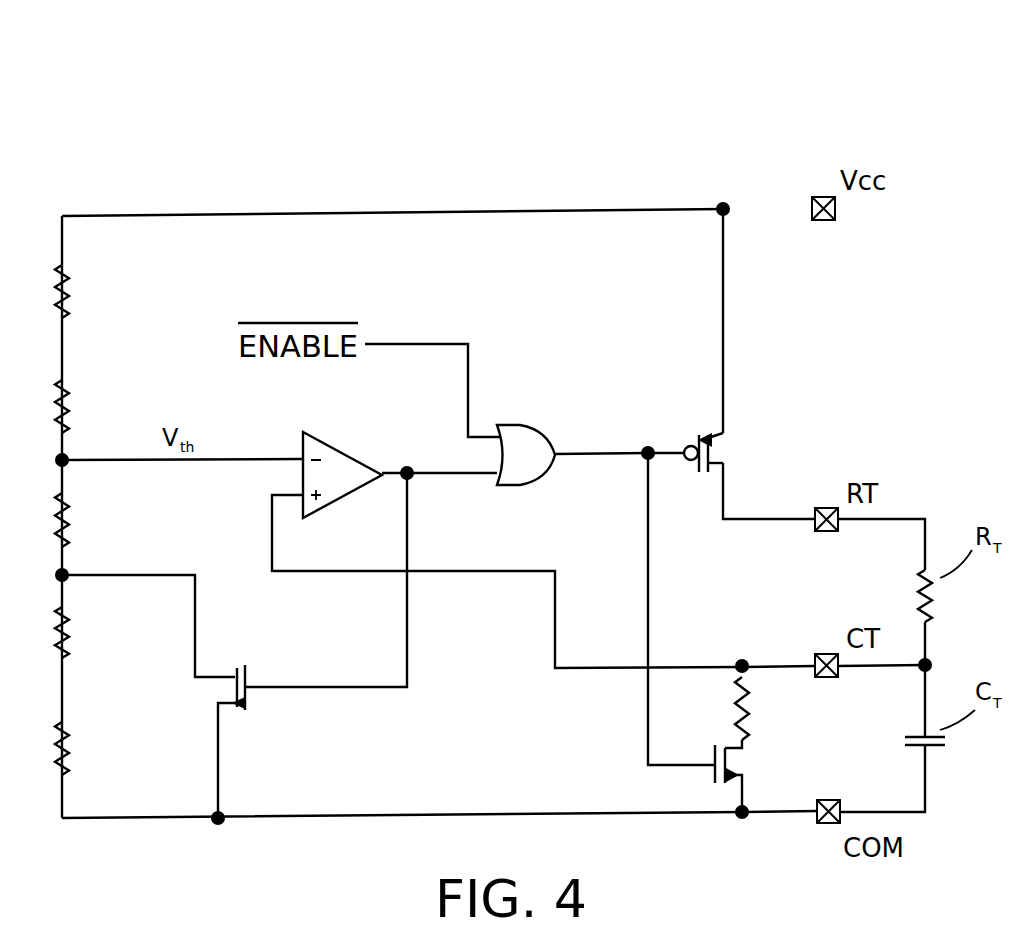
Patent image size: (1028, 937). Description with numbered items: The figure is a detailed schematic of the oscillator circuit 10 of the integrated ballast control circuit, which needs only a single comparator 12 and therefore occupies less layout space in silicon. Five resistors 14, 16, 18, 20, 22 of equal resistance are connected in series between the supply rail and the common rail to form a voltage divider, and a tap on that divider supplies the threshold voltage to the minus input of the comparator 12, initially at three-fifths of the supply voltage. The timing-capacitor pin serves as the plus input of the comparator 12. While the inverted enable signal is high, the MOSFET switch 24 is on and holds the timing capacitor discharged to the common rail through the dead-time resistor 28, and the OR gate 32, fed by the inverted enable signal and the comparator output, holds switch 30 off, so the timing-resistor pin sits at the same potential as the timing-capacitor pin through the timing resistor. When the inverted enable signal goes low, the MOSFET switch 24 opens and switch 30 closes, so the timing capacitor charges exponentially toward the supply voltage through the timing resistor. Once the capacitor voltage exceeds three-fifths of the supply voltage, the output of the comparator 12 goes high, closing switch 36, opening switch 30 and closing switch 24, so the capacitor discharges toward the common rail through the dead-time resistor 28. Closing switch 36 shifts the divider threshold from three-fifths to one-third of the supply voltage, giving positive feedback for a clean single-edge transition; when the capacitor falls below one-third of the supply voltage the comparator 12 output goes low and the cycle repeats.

The oscillator circuit 10 is at (455, 165).
The comparator 12 is at (345, 500).
The resistor 14 is at (70, 265).
The resistor 16 is at (70, 380).
The resistor 18 is at (70, 493).
The resistor 20 is at (70, 607).
The resistor 22 is at (70, 722).
The MOSFET switch 24 is at (744, 760).
The dead-time resistor 28 is at (743, 705).
The switch 30 is at (722, 449).
The OR gate 32 is at (547, 432).
The switch 36 is at (246, 685).